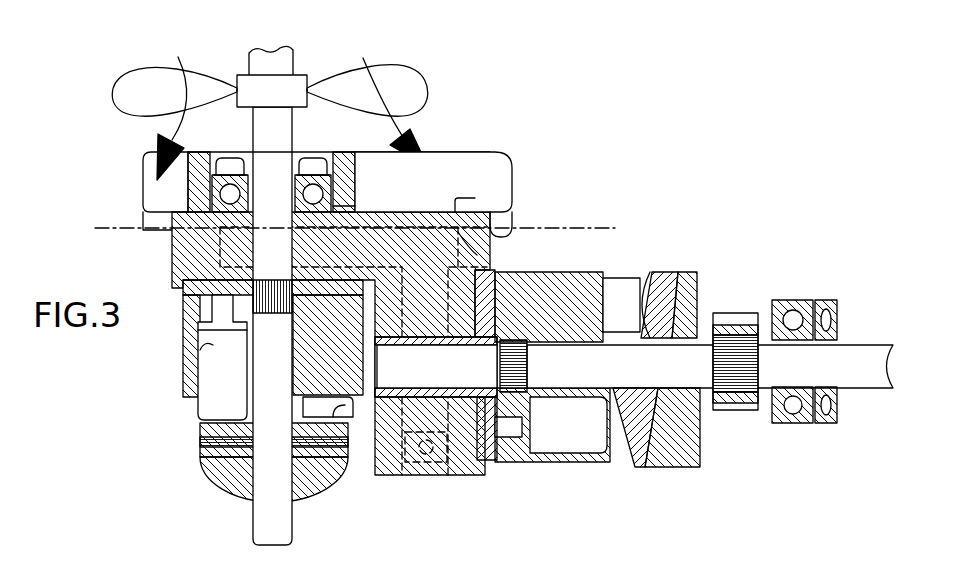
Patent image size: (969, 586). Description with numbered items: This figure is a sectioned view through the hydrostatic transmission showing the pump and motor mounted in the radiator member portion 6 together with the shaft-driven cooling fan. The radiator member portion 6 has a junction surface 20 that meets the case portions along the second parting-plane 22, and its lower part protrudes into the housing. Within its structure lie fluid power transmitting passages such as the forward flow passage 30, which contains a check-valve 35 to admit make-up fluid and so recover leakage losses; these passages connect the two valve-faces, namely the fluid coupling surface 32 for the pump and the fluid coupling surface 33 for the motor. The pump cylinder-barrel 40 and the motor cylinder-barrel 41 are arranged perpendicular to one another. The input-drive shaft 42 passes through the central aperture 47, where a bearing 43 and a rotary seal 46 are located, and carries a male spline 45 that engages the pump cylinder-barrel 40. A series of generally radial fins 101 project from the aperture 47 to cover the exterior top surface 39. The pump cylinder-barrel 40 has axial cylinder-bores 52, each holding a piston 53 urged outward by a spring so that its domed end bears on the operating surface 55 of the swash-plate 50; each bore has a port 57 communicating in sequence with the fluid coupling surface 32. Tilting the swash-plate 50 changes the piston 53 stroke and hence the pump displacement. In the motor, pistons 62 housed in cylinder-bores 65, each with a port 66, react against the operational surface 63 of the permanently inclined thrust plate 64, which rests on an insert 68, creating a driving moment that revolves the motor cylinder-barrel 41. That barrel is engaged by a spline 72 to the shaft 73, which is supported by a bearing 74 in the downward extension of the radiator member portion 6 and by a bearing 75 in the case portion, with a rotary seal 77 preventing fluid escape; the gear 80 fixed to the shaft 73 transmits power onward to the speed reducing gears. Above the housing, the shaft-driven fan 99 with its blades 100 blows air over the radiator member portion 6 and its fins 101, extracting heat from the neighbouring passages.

The radiator member portion 6 is at (345, 162).
The junction surface 20 is at (512, 203).
The second parting-plane 22 is at (93, 228).
The flow passage 30 is at (420, 233).
The fluid coupling surface 32 is at (208, 300).
The fluid coupling surface 33 is at (505, 448).
The check-valve 35 is at (427, 462).
The exterior top surface 39 is at (479, 191).
The pump cylinder-barrel 40 is at (188, 388).
The motor cylinder-barrel 41 is at (572, 278).
The input-drive shaft 42 is at (288, 236).
The bearing 43 is at (314, 160).
The male spline 45 is at (278, 280).
The rotary seal 46 is at (229, 160).
The central aperture 47 is at (337, 205).
The swash-plate 50 is at (232, 466).
The cylinder-bore 52 is at (208, 357).
The piston 53 is at (222, 357).
The operating surface 55 is at (335, 407).
The port 57 is at (200, 270).
The piston 62 is at (568, 425).
The operational surface 63 is at (643, 272).
The thrust plate 64 is at (670, 298).
The cylinder-bore 65 is at (590, 445).
The port 66 is at (513, 427).
The insert 68 is at (697, 450).
The spline 72 is at (517, 372).
The shaft 73 is at (710, 365).
The bearing 74 is at (428, 337).
The bearing 75 is at (793, 315).
The rotary seal 77 is at (830, 303).
The gear 80 is at (743, 325).
The shaft-driven fan 99 is at (433, 52).
The blades 100 is at (158, 78).
The fins 101 is at (480, 150).